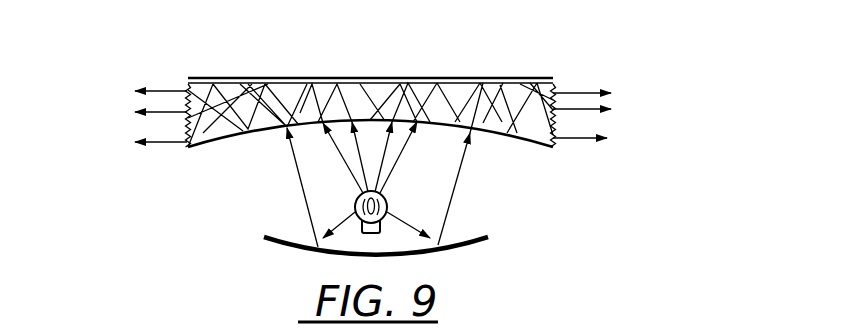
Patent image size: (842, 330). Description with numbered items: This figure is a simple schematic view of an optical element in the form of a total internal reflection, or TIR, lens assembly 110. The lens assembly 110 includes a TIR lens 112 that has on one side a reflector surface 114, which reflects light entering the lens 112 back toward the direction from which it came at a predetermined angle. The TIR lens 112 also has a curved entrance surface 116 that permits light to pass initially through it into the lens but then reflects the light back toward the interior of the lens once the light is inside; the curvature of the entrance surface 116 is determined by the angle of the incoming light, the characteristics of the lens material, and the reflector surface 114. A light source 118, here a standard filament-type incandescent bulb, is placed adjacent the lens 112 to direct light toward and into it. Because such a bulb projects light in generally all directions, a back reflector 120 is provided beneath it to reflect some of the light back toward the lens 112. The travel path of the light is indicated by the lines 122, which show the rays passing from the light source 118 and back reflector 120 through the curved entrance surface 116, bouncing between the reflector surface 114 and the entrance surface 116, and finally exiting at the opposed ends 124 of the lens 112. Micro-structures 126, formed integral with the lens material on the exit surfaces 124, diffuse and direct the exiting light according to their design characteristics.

The total internal reflection lens assembly 110 is at (352, 67).
The TIR lens 112 is at (551, 76).
The reflector surface 114 is at (408, 78).
The curved entrance surface 116 is at (507, 136).
The light source 118 is at (355, 203).
The back reflector 120 is at (281, 238).
The lines 122 is at (160, 112).
The opposed ends 124 is at (188, 84).
The micro-structures 126 is at (186, 128).